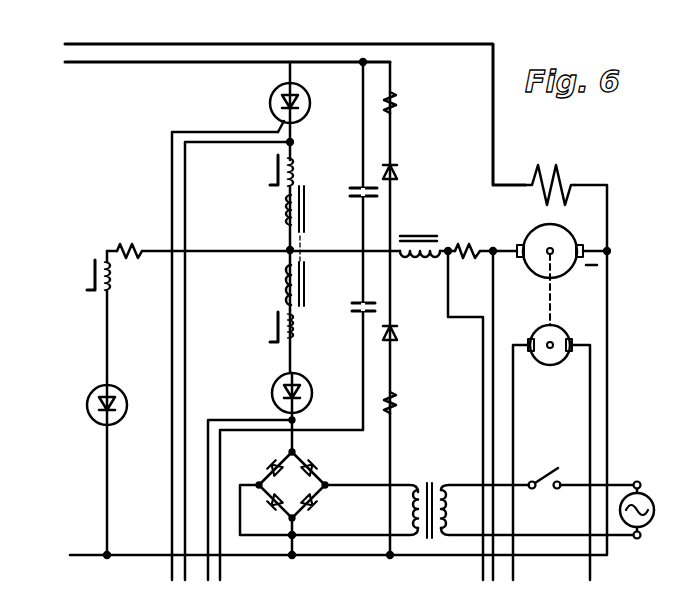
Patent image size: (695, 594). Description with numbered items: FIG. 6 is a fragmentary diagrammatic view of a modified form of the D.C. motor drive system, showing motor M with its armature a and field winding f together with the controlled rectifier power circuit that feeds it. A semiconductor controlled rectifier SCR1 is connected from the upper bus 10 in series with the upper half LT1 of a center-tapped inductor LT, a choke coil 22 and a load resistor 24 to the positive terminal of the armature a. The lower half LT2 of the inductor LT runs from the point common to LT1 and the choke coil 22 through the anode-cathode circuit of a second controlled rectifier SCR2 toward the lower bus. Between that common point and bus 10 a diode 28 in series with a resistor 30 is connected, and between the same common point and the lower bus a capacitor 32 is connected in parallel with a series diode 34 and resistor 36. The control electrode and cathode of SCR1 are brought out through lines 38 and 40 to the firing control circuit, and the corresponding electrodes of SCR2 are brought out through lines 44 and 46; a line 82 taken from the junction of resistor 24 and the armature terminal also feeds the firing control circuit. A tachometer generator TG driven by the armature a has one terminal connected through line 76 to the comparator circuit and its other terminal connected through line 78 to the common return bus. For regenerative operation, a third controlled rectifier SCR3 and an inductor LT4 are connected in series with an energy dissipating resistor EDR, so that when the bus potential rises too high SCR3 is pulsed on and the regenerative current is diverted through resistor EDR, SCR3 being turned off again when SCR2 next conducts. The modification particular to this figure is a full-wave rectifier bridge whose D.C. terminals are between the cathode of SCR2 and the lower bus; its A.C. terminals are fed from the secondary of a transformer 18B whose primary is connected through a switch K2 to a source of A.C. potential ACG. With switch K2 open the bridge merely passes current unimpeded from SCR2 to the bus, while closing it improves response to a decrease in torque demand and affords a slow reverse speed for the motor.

The bus 10 is at (128, 64).
The field winding f is at (565, 181).
The semiconductor controlled rectifier SCR1 is at (272, 112).
The line 38 is at (170, 140).
The line 40 is at (190, 166).
The upper half of center-tapped inductor LT1 is at (298, 190).
The center-tapped inductor LT is at (350, 236).
The lower half of inductor winding LT2 is at (297, 322).
The semiconductor controlled rectifier SCR2 is at (277, 400).
The line 44 is at (236, 418).
The capacitor 32 is at (358, 302).
The resistor 30 is at (398, 103).
The diode 28 is at (398, 172).
The diode 34 is at (398, 333).
The resistor 36 is at (398, 403).
The energy dissipating resistor EDR is at (133, 246).
The inductor LT4 is at (112, 278).
The semiconductor controlled rectifier SCR3 is at (90, 397).
The choke coil 22 is at (418, 262).
The resistor 24 is at (472, 262).
The line 82 is at (495, 305).
The D.C. motor M is at (516, 224).
The armature a is at (571, 244).
The tachometer generator TG is at (552, 364).
The line 76 is at (513, 578).
The line 78 is at (590, 578).
The line 46 is at (232, 436).
The transformer 18B is at (429, 483).
The switch K2 is at (548, 470).
The source of A.C. potential ACG is at (645, 540).